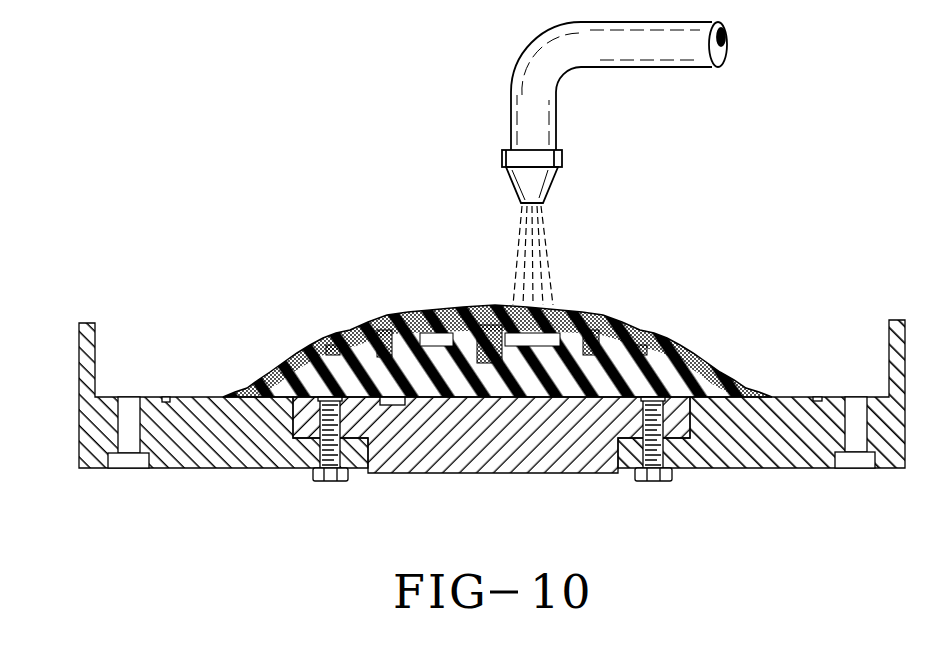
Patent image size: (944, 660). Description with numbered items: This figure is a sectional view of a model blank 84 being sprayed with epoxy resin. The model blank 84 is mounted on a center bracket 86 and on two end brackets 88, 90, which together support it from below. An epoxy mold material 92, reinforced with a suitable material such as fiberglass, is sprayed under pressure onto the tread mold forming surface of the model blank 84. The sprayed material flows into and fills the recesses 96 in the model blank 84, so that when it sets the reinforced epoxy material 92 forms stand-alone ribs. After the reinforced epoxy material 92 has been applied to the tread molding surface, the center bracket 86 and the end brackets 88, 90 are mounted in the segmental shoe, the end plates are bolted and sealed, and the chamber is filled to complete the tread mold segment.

The model blank 84 is at (566, 352).
The center bracket 86 is at (544, 446).
The end bracket 88 is at (255, 449).
The end bracket 90 is at (729, 446).
The epoxy mold material 92 is at (679, 350).
The recesses 96 is at (385, 346).